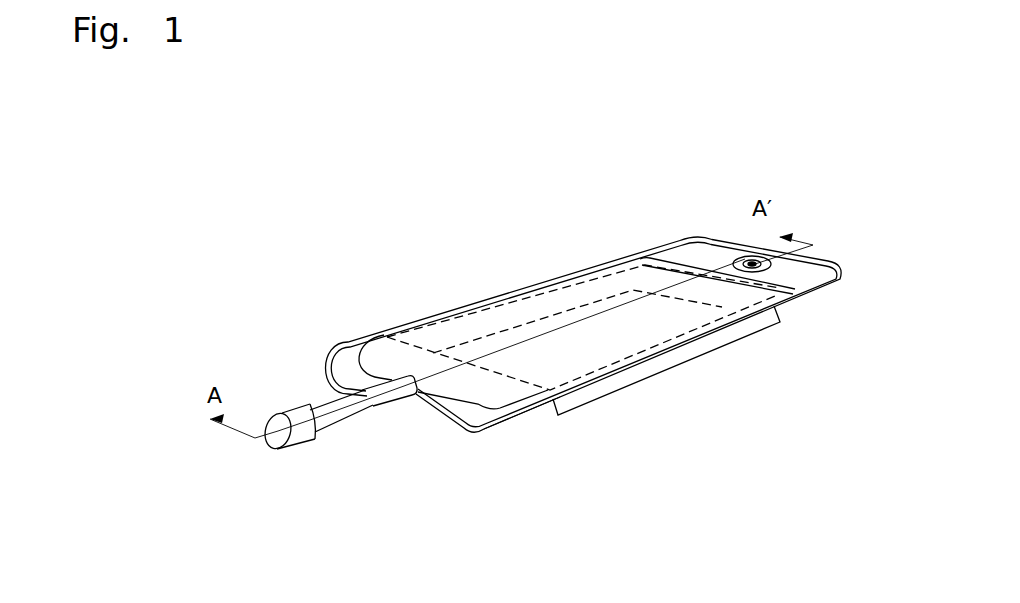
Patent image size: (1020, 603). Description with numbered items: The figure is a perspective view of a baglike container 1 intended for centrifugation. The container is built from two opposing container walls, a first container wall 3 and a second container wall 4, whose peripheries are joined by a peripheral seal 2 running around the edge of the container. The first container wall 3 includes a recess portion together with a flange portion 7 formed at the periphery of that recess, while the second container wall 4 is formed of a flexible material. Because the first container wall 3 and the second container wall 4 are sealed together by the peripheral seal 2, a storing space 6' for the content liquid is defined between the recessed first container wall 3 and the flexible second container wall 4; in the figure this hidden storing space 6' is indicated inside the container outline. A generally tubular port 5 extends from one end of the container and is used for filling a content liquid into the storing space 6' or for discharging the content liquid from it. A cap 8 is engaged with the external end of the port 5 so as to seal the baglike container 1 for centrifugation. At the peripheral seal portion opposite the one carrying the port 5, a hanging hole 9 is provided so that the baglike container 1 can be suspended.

The baglike container 1 is at (646, 192).
The peripheral seal 2 is at (343, 356).
The first container wall 3 is at (624, 380).
The second container wall 4 is at (507, 320).
The port 5 is at (282, 407).
The content storing space 6' is at (583, 266).
The flange portion of first container wall 7 is at (490, 432).
The cap 8 is at (266, 417).
The hanging hole 9 is at (752, 260).